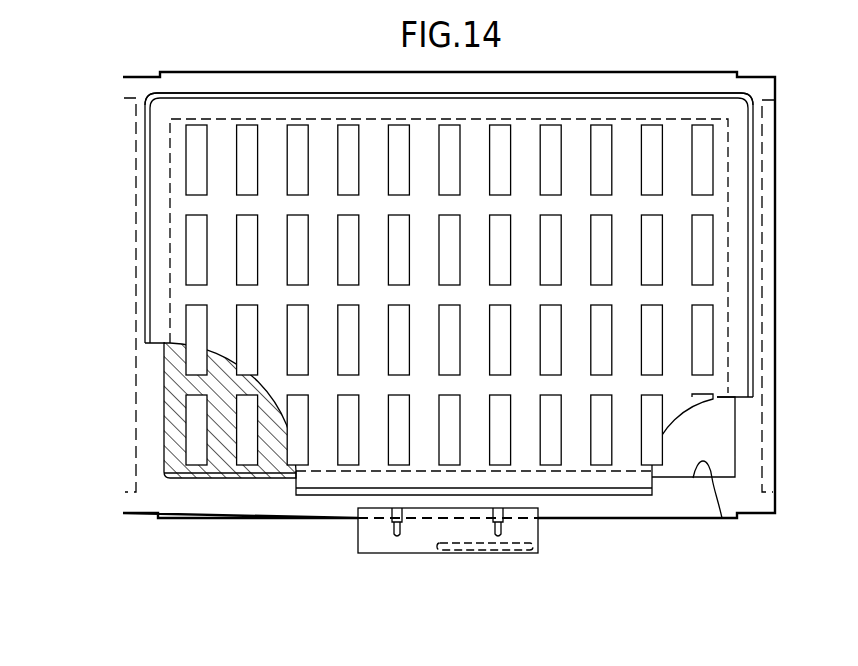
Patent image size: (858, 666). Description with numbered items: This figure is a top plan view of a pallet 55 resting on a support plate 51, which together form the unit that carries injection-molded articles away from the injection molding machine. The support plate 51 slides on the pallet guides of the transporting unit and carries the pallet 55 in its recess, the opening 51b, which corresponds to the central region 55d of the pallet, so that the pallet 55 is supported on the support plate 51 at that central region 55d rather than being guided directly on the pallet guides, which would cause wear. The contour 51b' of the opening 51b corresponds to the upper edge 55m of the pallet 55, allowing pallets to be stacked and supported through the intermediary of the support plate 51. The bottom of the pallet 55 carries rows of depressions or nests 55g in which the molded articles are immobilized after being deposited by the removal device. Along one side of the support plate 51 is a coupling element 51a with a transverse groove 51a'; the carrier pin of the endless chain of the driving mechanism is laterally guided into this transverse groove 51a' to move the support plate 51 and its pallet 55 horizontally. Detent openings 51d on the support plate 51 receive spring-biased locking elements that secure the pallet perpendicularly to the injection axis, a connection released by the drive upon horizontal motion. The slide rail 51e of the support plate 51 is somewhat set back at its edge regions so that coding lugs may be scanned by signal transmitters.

The support plate 51 is at (655, 0).
The coupling element 51a is at (414, 557).
The transverse groove 51a' is at (548, 565).
The recess (opening) 51b is at (434, 298).
The contour of the opening 51b' is at (729, 521).
The detent openings 51d is at (66, 0).
The slide rail 51e is at (805, 218).
The pallet 55 is at (712, 92).
The central region 55d is at (165, 407).
The depressions (nests) 55g is at (705, 152).
The upper edge 55m is at (287, 97).